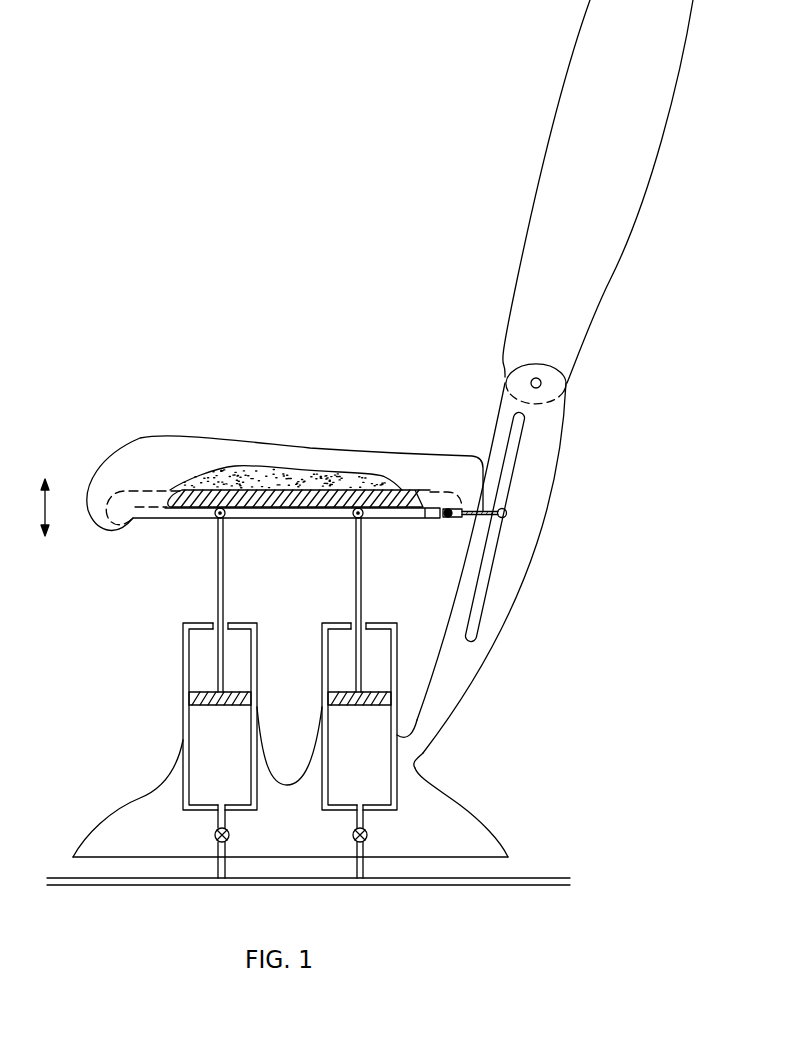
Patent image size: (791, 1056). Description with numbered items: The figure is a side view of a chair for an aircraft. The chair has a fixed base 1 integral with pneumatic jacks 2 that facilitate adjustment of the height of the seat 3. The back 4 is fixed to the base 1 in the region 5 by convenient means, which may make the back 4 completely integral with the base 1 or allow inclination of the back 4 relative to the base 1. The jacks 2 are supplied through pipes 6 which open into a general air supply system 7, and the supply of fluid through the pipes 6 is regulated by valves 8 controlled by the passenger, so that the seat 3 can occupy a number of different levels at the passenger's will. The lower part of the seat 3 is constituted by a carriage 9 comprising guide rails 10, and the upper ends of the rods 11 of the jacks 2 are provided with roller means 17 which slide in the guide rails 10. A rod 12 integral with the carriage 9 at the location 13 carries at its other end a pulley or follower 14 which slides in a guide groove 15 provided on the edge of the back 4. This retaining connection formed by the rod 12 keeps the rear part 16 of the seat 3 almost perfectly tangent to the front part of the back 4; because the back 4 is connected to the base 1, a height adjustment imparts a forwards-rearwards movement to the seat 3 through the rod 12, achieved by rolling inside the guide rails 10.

The fixed base 1 is at (113, 812).
The pneumatic jacks 2 is at (183, 666).
The seat 3 is at (193, 437).
The back 4 is at (530, 218).
The region 5 is at (415, 756).
The pipes 6 is at (366, 822).
The general air supply system 7 is at (518, 882).
The valves 8 is at (351, 836).
The carriage 9 is at (190, 508).
The guide rails 10 is at (320, 509).
The rods 11 is at (218, 597).
The rod 12 is at (497, 518).
The location 13 is at (448, 520).
The pulley or follower 14 is at (508, 513).
The guide groove 15 is at (522, 447).
The rear part of the seat 16 is at (470, 456).
The roller means 17 is at (226, 516).